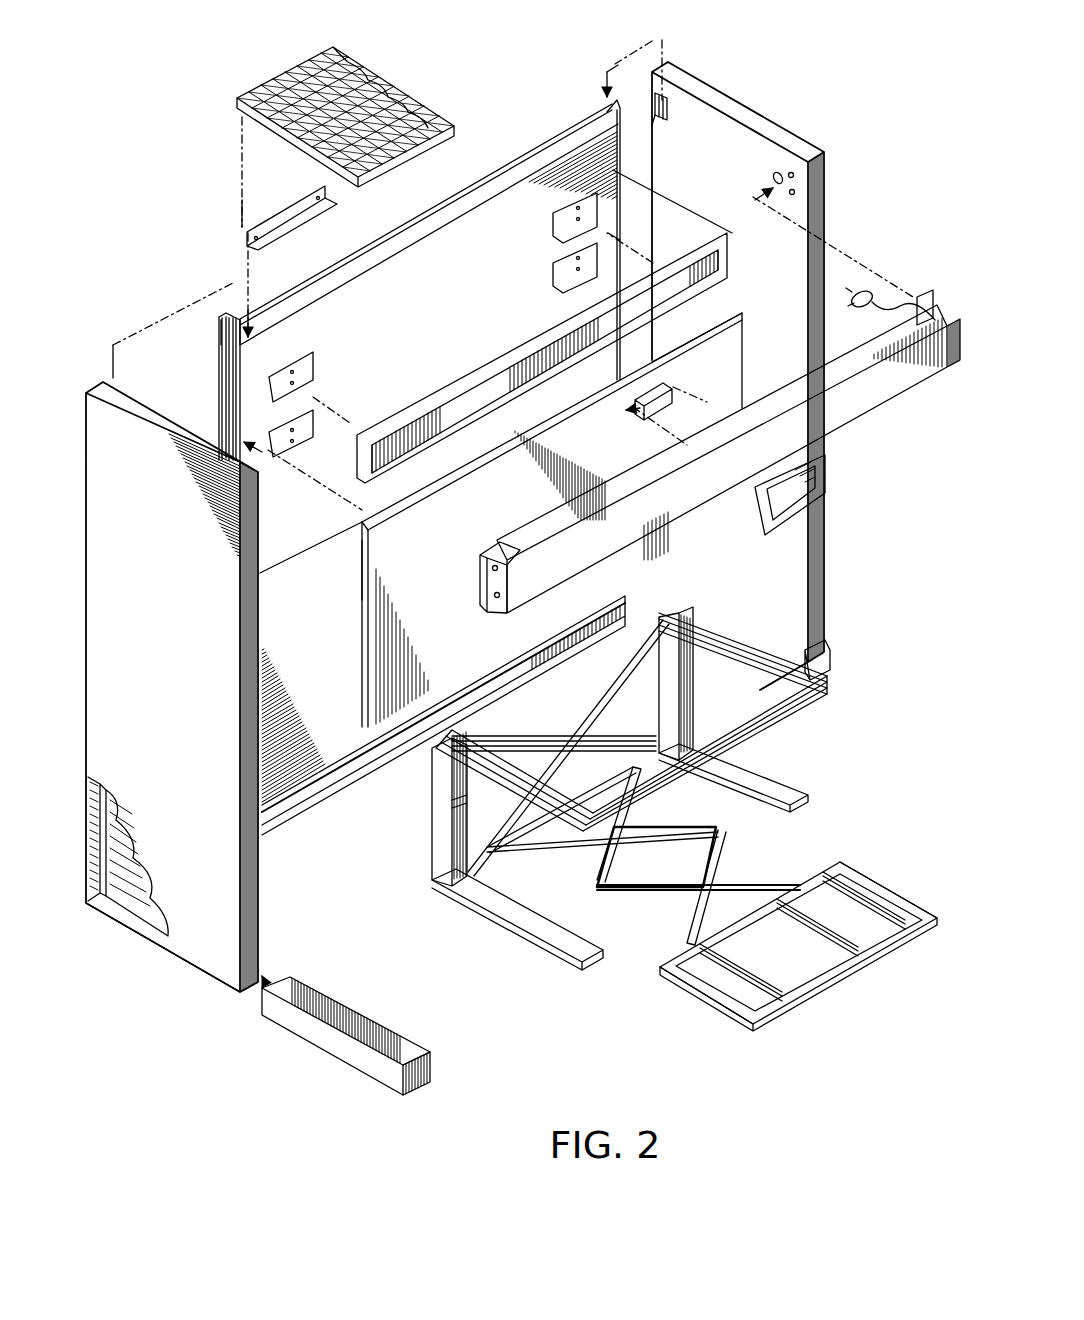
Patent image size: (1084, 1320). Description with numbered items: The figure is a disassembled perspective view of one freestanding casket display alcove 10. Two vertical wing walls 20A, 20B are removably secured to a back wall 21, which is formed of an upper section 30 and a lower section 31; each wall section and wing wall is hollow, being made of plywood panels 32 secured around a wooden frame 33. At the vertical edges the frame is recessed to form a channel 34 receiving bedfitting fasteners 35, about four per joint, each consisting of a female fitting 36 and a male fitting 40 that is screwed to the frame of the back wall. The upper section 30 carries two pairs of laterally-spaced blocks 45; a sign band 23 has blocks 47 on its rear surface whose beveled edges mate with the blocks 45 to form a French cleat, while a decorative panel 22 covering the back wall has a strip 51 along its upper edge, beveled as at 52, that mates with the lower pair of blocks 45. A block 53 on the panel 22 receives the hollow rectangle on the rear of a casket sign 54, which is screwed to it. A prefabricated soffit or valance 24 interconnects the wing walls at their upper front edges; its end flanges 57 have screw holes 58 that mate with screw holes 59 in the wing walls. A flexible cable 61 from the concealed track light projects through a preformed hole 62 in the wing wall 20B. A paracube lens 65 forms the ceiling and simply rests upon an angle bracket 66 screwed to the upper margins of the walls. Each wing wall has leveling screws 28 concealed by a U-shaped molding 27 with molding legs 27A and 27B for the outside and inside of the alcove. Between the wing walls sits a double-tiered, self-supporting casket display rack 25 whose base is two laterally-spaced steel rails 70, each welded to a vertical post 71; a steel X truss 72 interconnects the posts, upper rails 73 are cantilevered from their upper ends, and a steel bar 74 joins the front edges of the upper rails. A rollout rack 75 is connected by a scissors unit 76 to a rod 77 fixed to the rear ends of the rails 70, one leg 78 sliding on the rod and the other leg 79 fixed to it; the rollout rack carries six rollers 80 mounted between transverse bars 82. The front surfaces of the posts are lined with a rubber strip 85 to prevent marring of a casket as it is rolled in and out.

The alcove 10 is at (760, 46).
The left wing wall 20A is at (180, 625).
The right wing wall 20B is at (752, 112).
The back wall 21 is at (483, 163).
The decorative panel 22 is at (358, 702).
The sign band 23 is at (505, 352).
The soffit or valance 24 is at (483, 613).
The casket display rack 25 is at (646, 782).
The molding 27 is at (425, 1070).
The molding leg 27A is at (330, 1047).
The molding leg 27B is at (348, 1012).
The leveling screws 28 is at (122, 938).
The upper section 30 is at (448, 321).
The lower section 31 is at (430, 579).
The plywood panels 32 is at (158, 862).
The wooden frame 33 is at (112, 815).
The channel 34 is at (234, 380).
The bedfitting fasteners 35 is at (217, 340).
The female fitting 36 is at (658, 128).
The male fitting 40 is at (228, 352).
The blocks 45 is at (551, 228).
The blocks 47 is at (405, 408).
The strip 51 is at (712, 318).
The bevel 52 is at (360, 555).
The block 53 is at (670, 382).
The casket sign 54 is at (833, 482).
The end flanges 57 is at (482, 560).
The screw holes 58 is at (482, 590).
The screw holes 59 is at (796, 191).
The flexible cable 61 is at (872, 310).
The preformed hole 62 is at (774, 174).
The paracube lens 65 is at (362, 62).
The angle bracket 66 is at (303, 198).
The steel rails 70 is at (510, 925).
The vertical post 71 is at (432, 855).
The X truss 72 is at (592, 708).
The upper rails 73 is at (735, 632).
The steel bar 74 is at (790, 712).
The rollout rack 75 is at (860, 866).
The scissors unit 76 is at (660, 893).
The rod 77 is at (665, 780).
The leg 78 is at (673, 832).
The leg 79 is at (620, 860).
The rollers 80 is at (837, 862).
The transverse bars 82 is at (893, 888).
The rubber strip 85 is at (445, 812).